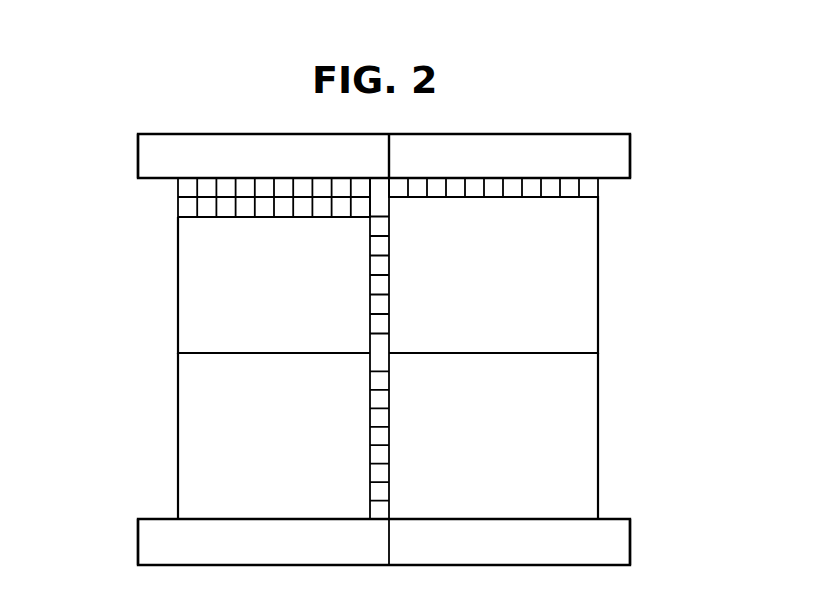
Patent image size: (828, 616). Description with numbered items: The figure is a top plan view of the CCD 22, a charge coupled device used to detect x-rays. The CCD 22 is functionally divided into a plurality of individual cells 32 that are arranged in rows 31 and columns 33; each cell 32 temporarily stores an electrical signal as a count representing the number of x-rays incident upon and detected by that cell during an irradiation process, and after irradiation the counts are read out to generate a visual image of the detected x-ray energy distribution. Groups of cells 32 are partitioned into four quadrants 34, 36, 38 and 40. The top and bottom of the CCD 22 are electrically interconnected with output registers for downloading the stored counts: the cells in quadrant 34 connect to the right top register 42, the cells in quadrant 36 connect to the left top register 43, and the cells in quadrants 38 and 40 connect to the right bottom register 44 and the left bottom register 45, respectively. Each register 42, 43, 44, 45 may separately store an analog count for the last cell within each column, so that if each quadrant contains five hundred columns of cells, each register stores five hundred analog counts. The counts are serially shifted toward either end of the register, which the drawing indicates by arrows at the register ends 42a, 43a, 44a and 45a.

The CCD 22 is at (116, 280).
The rows 31 is at (170, 183).
The cells 32 is at (285, 210).
The columns 33 is at (378, 529).
The quadrant 34 is at (493, 275).
The quadrant 36 is at (274, 285).
The quadrant 38 is at (539, 436).
The quadrant 40 is at (233, 436).
The right top register 42 is at (428, 158).
The end of upper right bar 42a is at (645, 166).
The left top register 43 is at (250, 150).
The end of upper left bar 43a is at (126, 163).
The right bottom register 44 is at (552, 546).
The end of lower right bar 44a is at (645, 539).
The left bottom register 45 is at (160, 535).
The end of lower left bar 45a is at (131, 548).